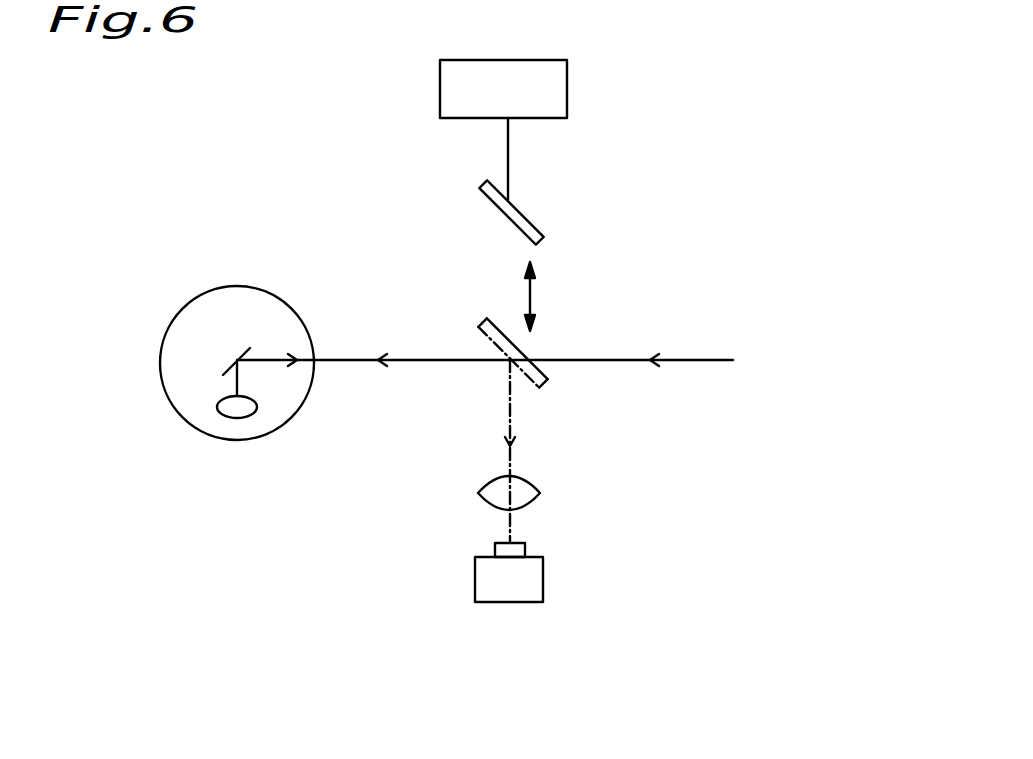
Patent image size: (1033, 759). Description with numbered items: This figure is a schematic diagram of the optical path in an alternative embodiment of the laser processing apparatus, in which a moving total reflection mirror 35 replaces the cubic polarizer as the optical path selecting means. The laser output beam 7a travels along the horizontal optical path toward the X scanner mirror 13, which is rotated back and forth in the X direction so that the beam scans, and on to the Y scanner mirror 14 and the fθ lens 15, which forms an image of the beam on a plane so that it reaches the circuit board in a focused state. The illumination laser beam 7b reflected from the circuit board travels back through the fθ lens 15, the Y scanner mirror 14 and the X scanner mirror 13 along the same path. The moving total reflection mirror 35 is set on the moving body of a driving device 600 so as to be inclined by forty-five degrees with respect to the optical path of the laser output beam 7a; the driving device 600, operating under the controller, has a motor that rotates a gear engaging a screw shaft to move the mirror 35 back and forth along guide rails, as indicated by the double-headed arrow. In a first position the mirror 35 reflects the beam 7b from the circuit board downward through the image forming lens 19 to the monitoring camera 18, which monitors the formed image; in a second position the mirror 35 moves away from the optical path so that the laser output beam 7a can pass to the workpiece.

The driving device 600 is at (553, 70).
The moving total reflection mirror 35 is at (520, 210).
The laser output beam 7a is at (384, 356).
The illumination laser beam 7b is at (653, 357).
The X scanner mirror 13 is at (245, 352).
The Y scanner mirror 14 is at (252, 418).
The fθ lens 15 is at (172, 413).
The image forming lens 19 is at (535, 481).
The monitoring camera 18 is at (543, 576).